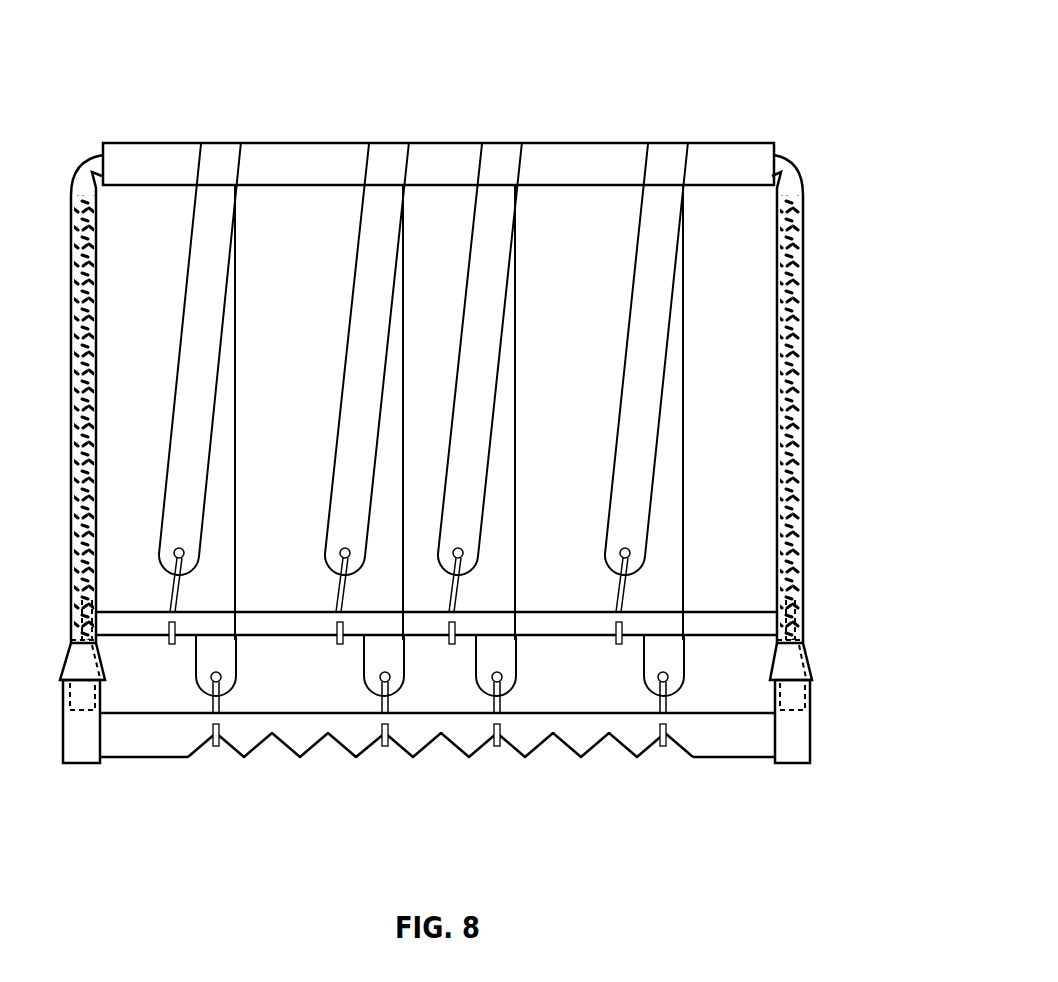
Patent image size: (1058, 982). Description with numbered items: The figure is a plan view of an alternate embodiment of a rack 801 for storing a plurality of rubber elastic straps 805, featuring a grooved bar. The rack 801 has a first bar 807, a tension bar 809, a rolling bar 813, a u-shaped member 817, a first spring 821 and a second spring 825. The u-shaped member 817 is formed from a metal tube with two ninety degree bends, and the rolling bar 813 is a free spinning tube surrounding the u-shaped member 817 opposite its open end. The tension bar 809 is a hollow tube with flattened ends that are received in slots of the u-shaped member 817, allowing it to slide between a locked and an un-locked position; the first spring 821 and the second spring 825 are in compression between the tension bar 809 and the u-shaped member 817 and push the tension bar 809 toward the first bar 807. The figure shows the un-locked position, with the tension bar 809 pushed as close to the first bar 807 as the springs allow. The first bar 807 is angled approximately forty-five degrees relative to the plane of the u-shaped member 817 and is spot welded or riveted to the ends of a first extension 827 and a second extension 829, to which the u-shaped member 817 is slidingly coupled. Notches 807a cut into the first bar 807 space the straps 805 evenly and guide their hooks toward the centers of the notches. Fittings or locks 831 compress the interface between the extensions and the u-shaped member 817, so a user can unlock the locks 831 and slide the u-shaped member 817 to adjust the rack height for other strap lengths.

The rack 801 is at (792, 82).
The elastic straps 805 is at (403, 210).
The first bar 807 is at (702, 760).
The notches 807a is at (440, 763).
The tension bar 809 is at (710, 608).
The rolling bar 813 is at (420, 143).
The u-shaped member 817 is at (803, 276).
The first spring 821 is at (98, 385).
The second spring 825 is at (803, 448).
The first extension 827 is at (100, 705).
The second extension 829 is at (810, 758).
The locks 831 is at (105, 665).